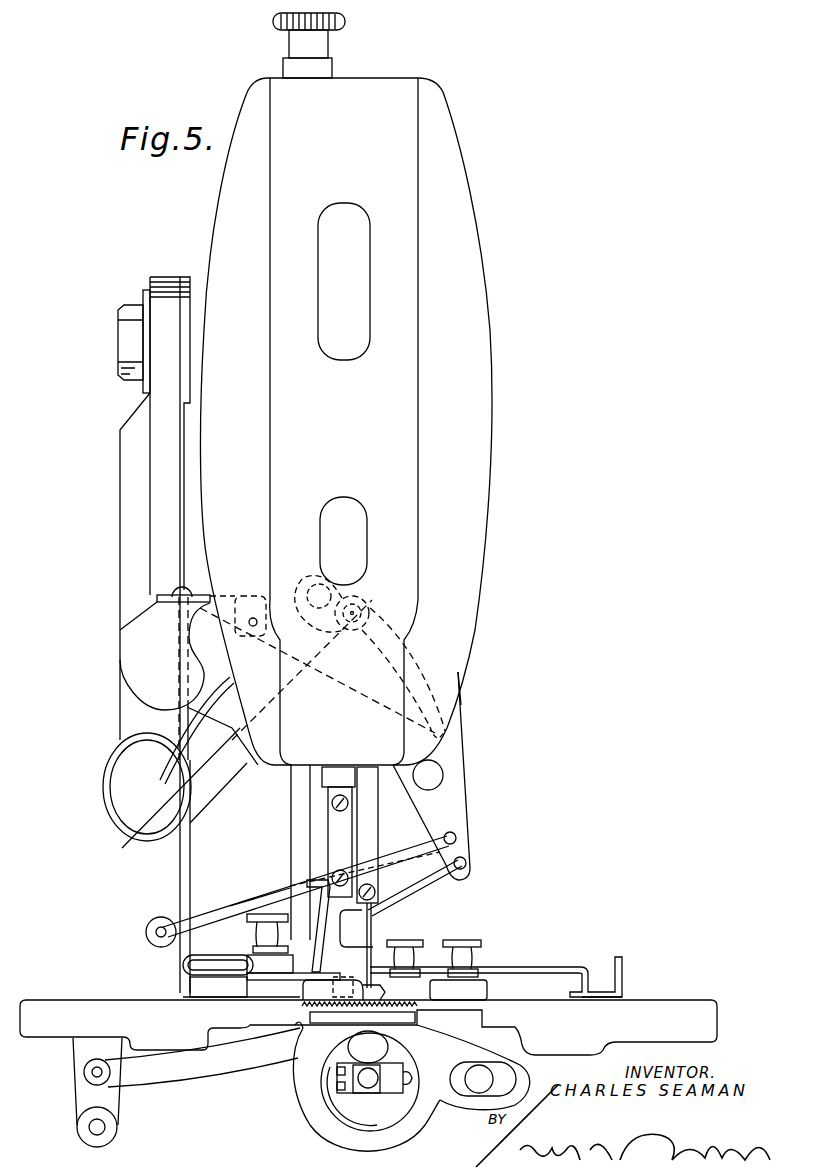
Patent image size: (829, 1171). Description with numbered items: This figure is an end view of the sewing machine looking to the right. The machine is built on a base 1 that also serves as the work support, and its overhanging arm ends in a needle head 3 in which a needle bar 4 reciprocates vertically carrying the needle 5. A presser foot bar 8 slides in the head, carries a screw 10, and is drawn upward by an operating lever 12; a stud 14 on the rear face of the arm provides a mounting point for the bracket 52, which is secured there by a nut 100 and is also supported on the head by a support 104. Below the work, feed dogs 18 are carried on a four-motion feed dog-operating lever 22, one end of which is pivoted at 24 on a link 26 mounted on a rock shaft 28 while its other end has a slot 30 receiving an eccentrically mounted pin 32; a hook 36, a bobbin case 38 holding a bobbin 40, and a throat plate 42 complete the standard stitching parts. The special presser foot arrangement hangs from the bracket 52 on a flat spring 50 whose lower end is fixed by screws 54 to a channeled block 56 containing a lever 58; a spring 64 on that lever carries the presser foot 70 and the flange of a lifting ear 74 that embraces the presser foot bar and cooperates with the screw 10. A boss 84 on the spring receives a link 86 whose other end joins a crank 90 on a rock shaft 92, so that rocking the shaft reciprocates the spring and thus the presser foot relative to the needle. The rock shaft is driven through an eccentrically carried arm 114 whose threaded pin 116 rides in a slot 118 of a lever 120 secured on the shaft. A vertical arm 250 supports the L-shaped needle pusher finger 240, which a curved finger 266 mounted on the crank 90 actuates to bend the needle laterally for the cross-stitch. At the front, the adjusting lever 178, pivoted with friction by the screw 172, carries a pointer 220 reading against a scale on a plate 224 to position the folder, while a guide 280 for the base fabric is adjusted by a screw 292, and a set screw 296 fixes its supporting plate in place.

The base 1 is at (62, 1000).
The needle head 3 is at (413, 497).
The needle bar 4 is at (373, 828).
The needle 5 is at (373, 933).
The presser foot bar 8 is at (292, 828).
The screw 10 is at (335, 973).
The operating lever 12 is at (142, 838).
The stud 14 is at (195, 296).
The feed dogs 18 is at (412, 1010).
The feed dog-operating lever 22 is at (222, 1078).
The pivot 24 is at (84, 1073).
The link 26 is at (78, 1097).
The rock shaft 28 is at (85, 1130).
The slot 30 is at (455, 1092).
The pin 32 is at (480, 1087).
The hook 36 is at (375, 1143).
The bobbin case 38 is at (333, 1118).
The bobbin 40 is at (340, 1092).
The throat plate 42 is at (470, 1005).
The flat spring 50 is at (192, 858).
The bracket 52 is at (133, 650).
The screws 54 is at (178, 968).
The channeled block 56 is at (182, 985).
The lever 58 is at (225, 957).
The spring 64 is at (222, 978).
The presser foot 70 is at (352, 978).
The lifting ear 74 is at (310, 903).
The boss 84 is at (146, 928).
The link 86 is at (252, 892).
The crank 90 is at (467, 822).
The rock shaft 92 is at (440, 770).
The nut 100 is at (118, 330).
The support 104 is at (255, 597).
The arm 114 is at (245, 775).
The threaded pin 116 is at (365, 600).
The slot 118 is at (430, 650).
The lever 120 is at (455, 737).
The screw 172 is at (268, 913).
The adjusting lever 178 is at (538, 967).
The pointer 220 is at (590, 1002).
The plate 224 is at (508, 997).
The needle pusher finger 240 is at (368, 928).
The vertical arm 250 is at (337, 822).
The finger 266 is at (418, 890).
The guide 280 is at (391, 990).
The screw 292 is at (470, 935).
The set screw 296 is at (413, 935).